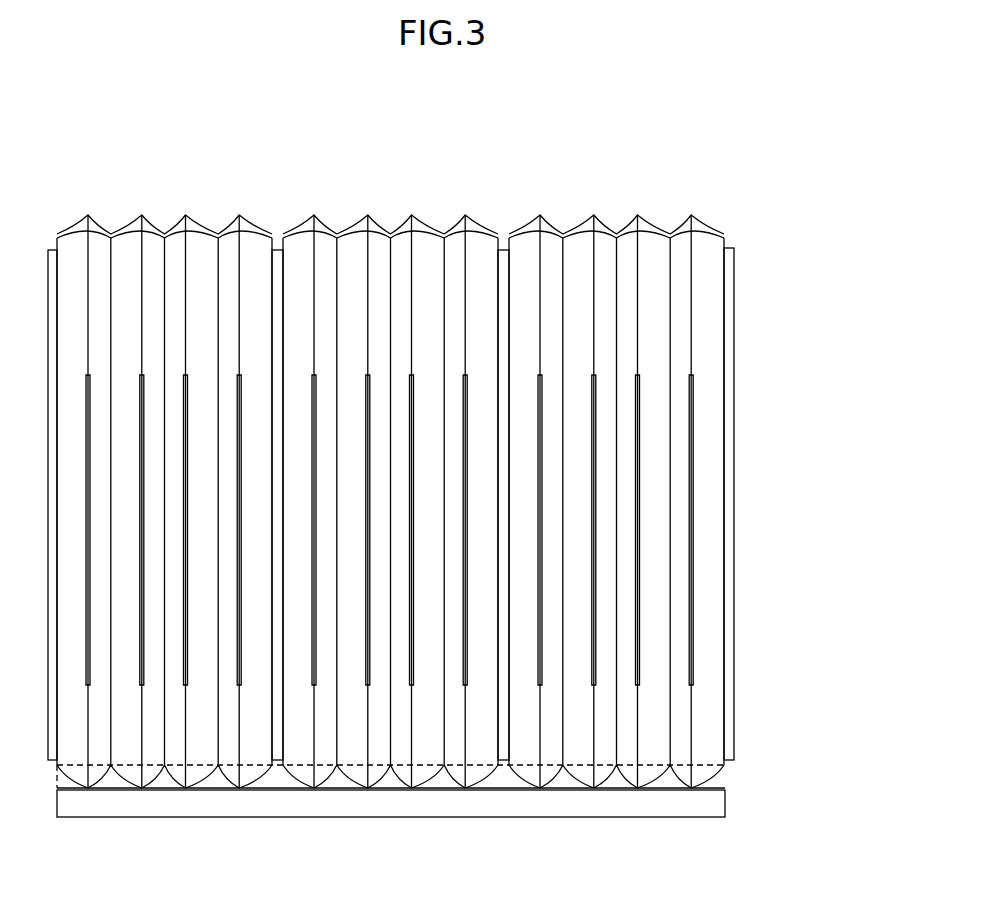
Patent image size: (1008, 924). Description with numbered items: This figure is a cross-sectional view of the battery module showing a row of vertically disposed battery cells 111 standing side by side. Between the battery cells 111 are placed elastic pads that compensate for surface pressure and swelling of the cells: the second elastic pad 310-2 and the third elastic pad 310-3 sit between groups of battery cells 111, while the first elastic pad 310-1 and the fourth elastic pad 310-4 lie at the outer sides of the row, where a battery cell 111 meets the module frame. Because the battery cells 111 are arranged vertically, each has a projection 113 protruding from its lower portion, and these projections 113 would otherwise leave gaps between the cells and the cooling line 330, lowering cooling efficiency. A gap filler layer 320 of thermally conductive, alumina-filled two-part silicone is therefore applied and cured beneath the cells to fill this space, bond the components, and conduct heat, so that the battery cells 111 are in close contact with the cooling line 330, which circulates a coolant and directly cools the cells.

The battery cell 111 is at (705, 243).
The projection 113 is at (466, 786).
The first elastic pad 310-1 is at (728, 370).
The second elastic pad 310-2 is at (505, 310).
The third elastic pad 310-3 is at (282, 308).
The fourth elastic pad 310-4 is at (55, 315).
The gap filler layer 320 is at (715, 783).
The cooling line 330 is at (715, 808).